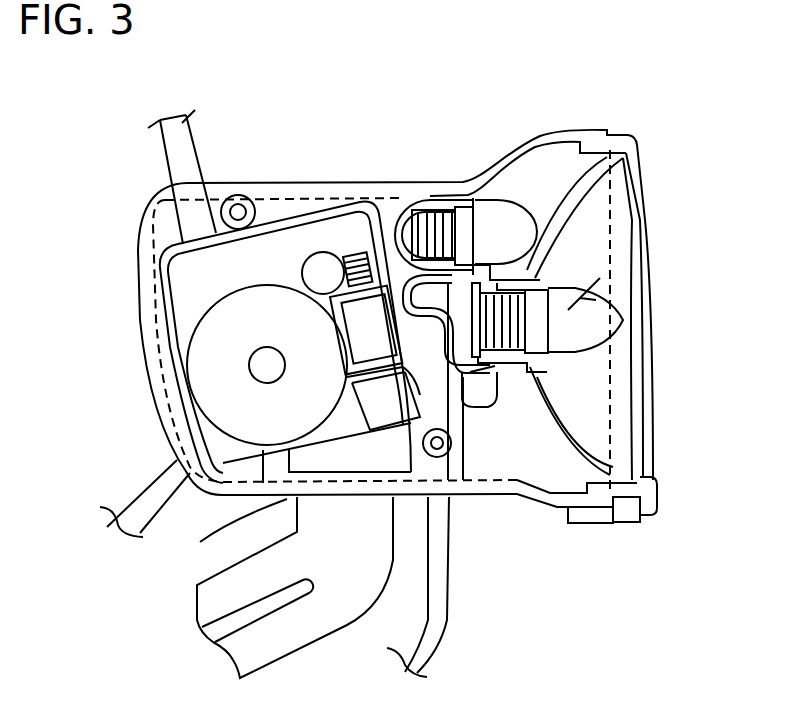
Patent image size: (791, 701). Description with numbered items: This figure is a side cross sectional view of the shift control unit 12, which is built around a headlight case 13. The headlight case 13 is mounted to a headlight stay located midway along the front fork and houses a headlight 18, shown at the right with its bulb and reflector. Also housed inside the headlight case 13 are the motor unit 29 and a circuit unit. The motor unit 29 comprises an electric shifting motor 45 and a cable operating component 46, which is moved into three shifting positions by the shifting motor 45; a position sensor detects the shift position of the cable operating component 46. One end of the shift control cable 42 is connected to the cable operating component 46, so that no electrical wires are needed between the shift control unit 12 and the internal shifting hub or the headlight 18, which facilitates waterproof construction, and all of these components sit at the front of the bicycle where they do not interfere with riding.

The shift control unit 12 is at (468, 133).
The headlight case 13 is at (377, 183).
The headlight 18 is at (580, 295).
The motor unit 29 is at (200, 542).
The shift control cable 42 is at (182, 148).
The electric shifting motor 45 is at (432, 462).
The cable operating component 46 is at (245, 403).